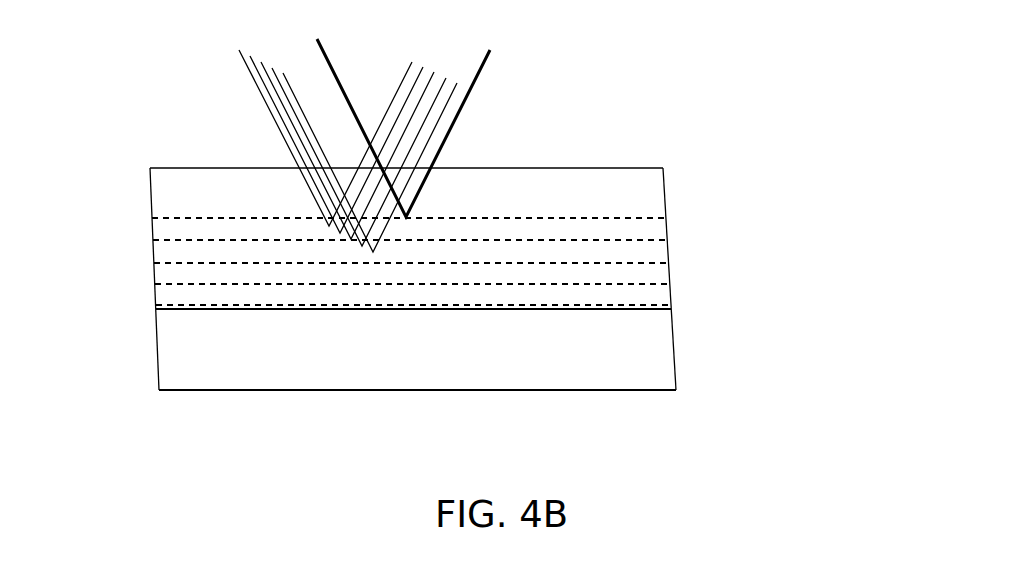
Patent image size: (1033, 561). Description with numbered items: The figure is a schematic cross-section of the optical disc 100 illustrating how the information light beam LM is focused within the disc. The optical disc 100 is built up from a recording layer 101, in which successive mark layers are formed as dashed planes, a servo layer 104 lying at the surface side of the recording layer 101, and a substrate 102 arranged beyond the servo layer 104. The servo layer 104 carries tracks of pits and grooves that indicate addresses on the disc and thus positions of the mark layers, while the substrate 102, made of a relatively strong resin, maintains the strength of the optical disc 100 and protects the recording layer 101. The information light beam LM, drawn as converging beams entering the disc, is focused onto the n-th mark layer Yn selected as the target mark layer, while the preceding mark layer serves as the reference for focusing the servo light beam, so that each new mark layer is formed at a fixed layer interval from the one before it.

The optical disc 100 is at (612, 134).
The recording layer 101 is at (662, 216).
The servo layer 104 is at (668, 309).
The substrate 102 is at (673, 352).
The information light beam LM is at (452, 126).
The n-th mark layer Yn is at (167, 218).